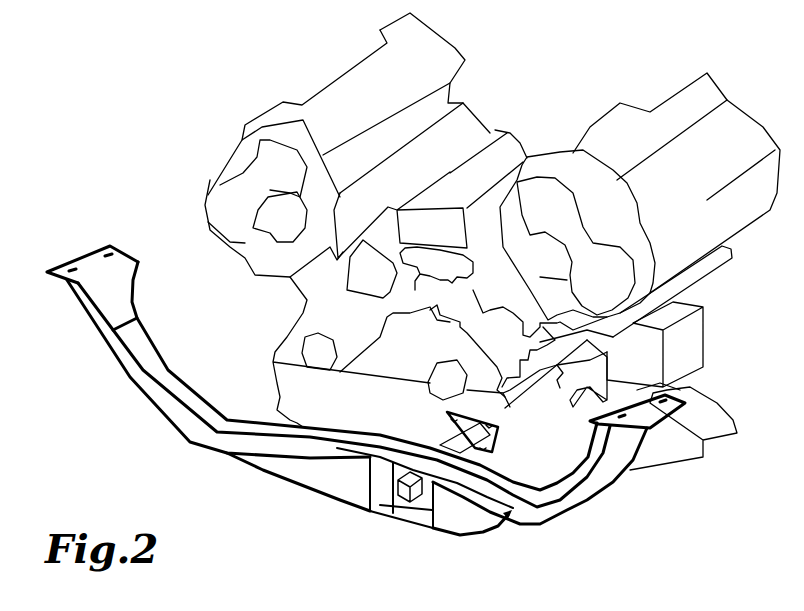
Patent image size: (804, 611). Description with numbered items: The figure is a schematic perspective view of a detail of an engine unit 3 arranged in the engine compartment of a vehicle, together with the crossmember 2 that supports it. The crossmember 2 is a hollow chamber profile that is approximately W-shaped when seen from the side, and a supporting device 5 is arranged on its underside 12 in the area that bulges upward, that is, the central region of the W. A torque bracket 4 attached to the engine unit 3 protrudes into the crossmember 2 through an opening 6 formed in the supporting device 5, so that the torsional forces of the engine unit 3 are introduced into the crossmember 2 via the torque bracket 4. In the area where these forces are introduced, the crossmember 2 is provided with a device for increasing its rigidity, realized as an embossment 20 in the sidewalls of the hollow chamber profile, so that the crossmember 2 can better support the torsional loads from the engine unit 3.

The crossmember 2 is at (170, 412).
The engine unit 3 is at (492, 133).
The torque bracket 4 is at (370, 485).
The supporting device 5 is at (460, 512).
The opening 6 is at (407, 519).
The underside 12 is at (520, 545).
The embossment 20 is at (350, 470).